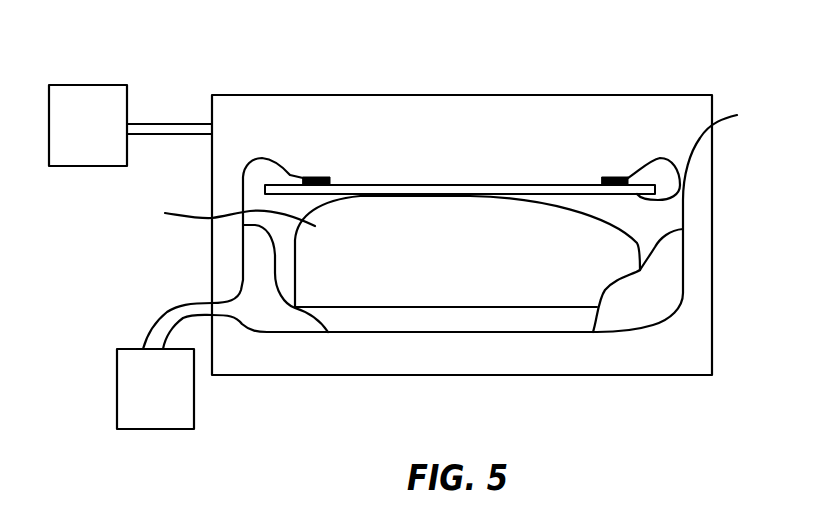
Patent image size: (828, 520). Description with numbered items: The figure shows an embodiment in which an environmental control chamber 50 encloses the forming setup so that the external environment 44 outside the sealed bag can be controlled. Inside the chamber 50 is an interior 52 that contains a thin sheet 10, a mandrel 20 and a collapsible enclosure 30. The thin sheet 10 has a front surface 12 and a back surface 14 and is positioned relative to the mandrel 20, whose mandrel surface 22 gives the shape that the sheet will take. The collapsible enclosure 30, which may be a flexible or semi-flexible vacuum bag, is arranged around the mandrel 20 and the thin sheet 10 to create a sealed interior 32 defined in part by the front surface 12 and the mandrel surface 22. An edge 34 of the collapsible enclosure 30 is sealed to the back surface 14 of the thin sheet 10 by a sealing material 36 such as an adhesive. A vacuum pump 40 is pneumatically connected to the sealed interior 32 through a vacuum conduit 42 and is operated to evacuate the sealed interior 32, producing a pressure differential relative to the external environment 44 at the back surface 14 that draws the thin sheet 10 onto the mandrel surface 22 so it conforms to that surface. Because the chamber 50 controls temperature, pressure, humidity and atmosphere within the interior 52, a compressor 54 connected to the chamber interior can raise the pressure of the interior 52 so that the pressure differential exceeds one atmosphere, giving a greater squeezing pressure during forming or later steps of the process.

The thin sheet 10 is at (540, 184).
The front surface 12 is at (491, 217).
The back surface 14 is at (365, 185).
The mandrel 20 is at (467, 251).
The mandrel surface 22 is at (224, 211).
The collapsible enclosure 30 is at (665, 287).
The sealed interior 32 is at (656, 213).
The edge 34 is at (298, 177).
The sealing material 36 is at (325, 177).
The vacuum pump 40 is at (155, 389).
The vacuum conduit 42 is at (182, 314).
The external environment 44 is at (462, 151).
The environmental control chamber 50 is at (669, 96).
The interior 52 is at (466, 122).
The compressor 54 is at (130, 125).